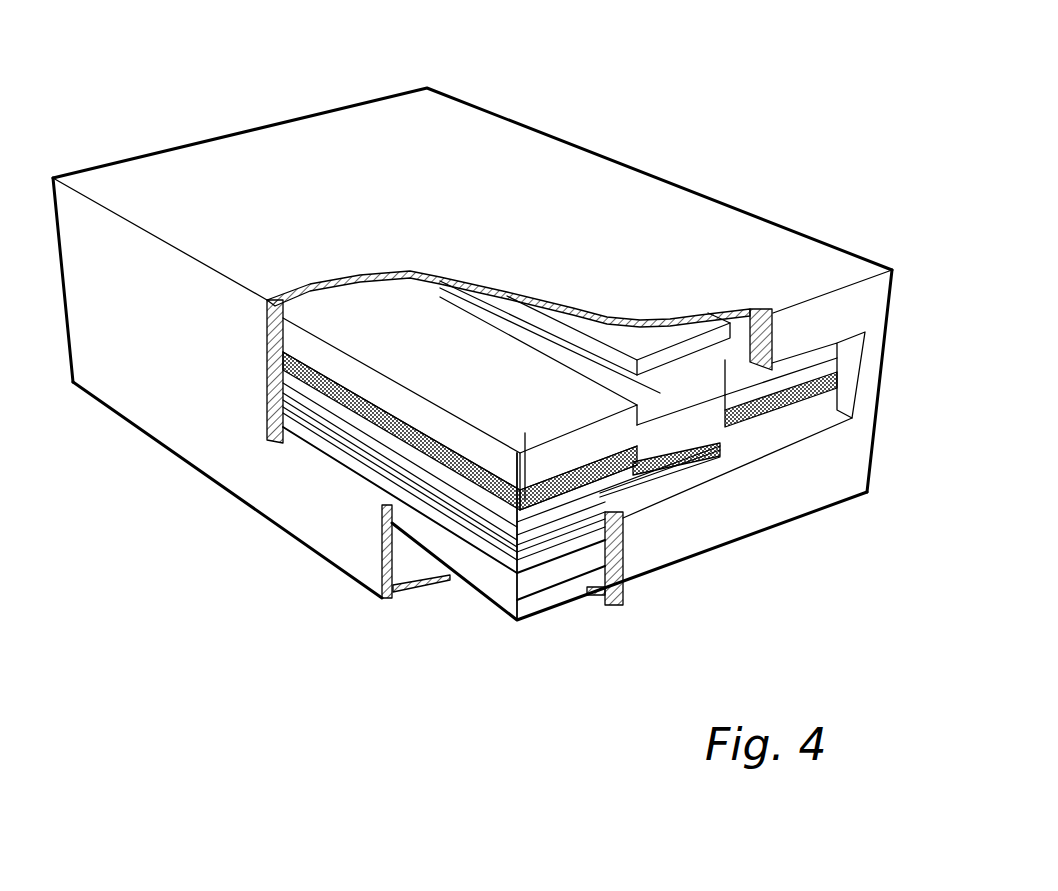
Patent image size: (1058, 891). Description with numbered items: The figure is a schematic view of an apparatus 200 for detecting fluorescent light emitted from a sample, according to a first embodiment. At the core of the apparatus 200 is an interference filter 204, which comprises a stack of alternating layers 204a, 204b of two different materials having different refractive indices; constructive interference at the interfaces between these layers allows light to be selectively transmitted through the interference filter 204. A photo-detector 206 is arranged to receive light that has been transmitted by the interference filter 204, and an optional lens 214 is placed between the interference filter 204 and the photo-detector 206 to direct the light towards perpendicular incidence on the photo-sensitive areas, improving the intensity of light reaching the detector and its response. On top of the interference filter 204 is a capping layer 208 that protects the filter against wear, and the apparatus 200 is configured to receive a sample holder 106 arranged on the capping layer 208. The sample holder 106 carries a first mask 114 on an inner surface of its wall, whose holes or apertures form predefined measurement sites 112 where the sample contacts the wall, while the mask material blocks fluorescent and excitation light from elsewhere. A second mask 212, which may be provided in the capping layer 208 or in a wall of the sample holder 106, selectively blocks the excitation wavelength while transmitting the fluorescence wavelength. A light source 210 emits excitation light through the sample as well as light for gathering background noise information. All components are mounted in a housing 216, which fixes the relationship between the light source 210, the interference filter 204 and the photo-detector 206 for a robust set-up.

The apparatus 200 is at (614, 112).
The light source 210 is at (663, 332).
The measurement sites 112 is at (683, 423).
The first mask 114 is at (397, 430).
The capping layer 208 is at (407, 467).
The layer 204b is at (390, 583).
The layer 204a is at (457, 530).
The lens 214 is at (490, 572).
The photo-detector 206 is at (502, 617).
The interference filter 204 is at (540, 532).
The sample holder 106 is at (568, 478).
The second mask 212 is at (688, 468).
The housing 216 is at (822, 510).